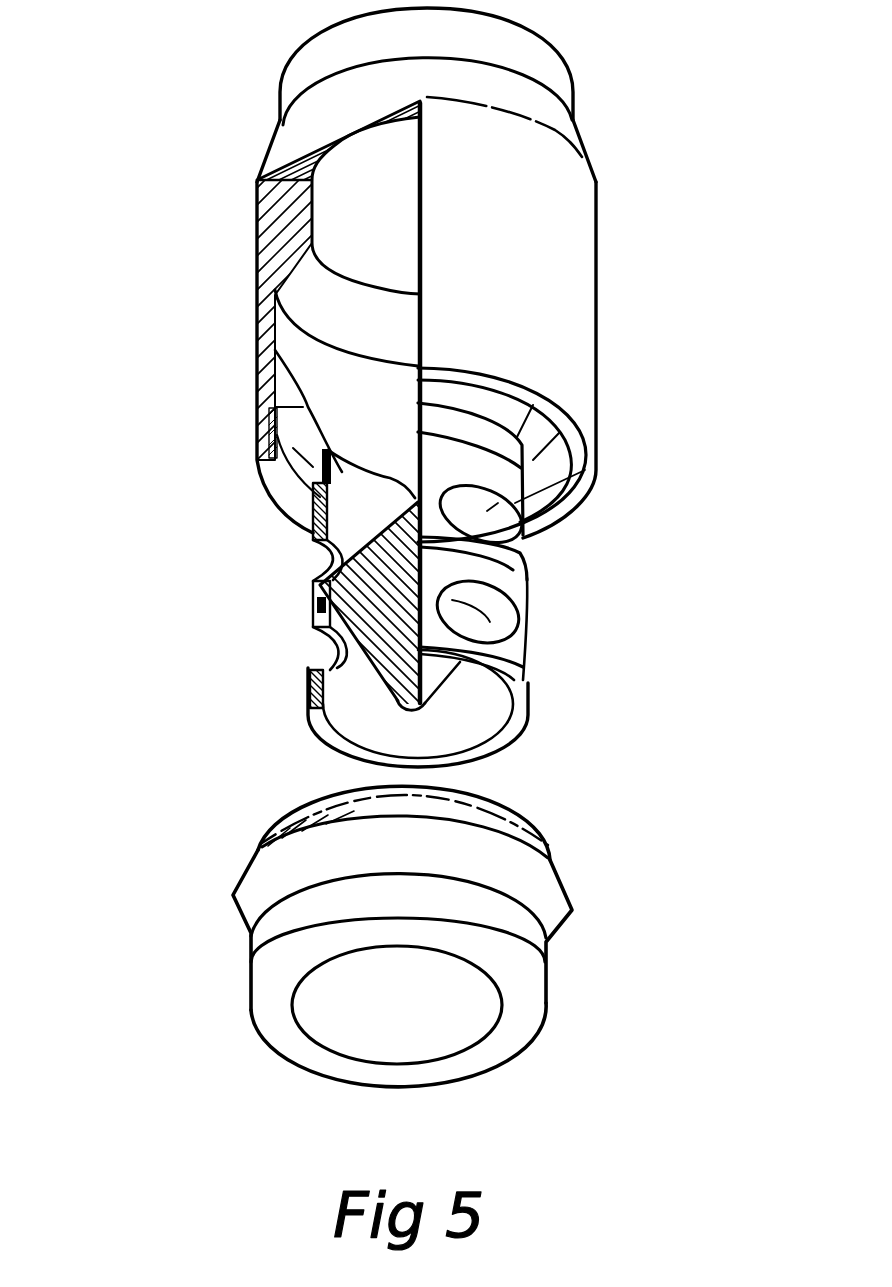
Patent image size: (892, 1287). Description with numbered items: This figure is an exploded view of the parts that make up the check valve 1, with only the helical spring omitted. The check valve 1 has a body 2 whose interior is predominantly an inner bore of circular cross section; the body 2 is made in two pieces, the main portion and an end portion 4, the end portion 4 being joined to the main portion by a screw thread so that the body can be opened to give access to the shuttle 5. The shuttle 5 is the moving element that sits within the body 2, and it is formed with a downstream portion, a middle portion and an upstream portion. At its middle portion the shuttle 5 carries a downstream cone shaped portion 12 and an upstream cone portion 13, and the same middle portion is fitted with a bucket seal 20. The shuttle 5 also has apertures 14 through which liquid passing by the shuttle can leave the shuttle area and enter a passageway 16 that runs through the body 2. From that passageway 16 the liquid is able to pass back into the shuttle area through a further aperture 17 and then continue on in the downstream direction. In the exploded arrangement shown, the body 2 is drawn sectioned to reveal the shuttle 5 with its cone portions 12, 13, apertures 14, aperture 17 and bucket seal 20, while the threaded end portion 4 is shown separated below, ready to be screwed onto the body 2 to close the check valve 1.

The check valve 1 is at (585, 288).
The body 2 is at (586, 228).
The end portion 4 is at (550, 907).
The shuttle 5 is at (413, 497).
The downstream cone shaped portion 12 is at (317, 662).
The upstream cone portion 13 is at (313, 530).
The apertures 14 is at (517, 652).
The passageway 16 is at (280, 315).
The aperture 17 is at (597, 412).
The bucket seal 20 is at (525, 588).